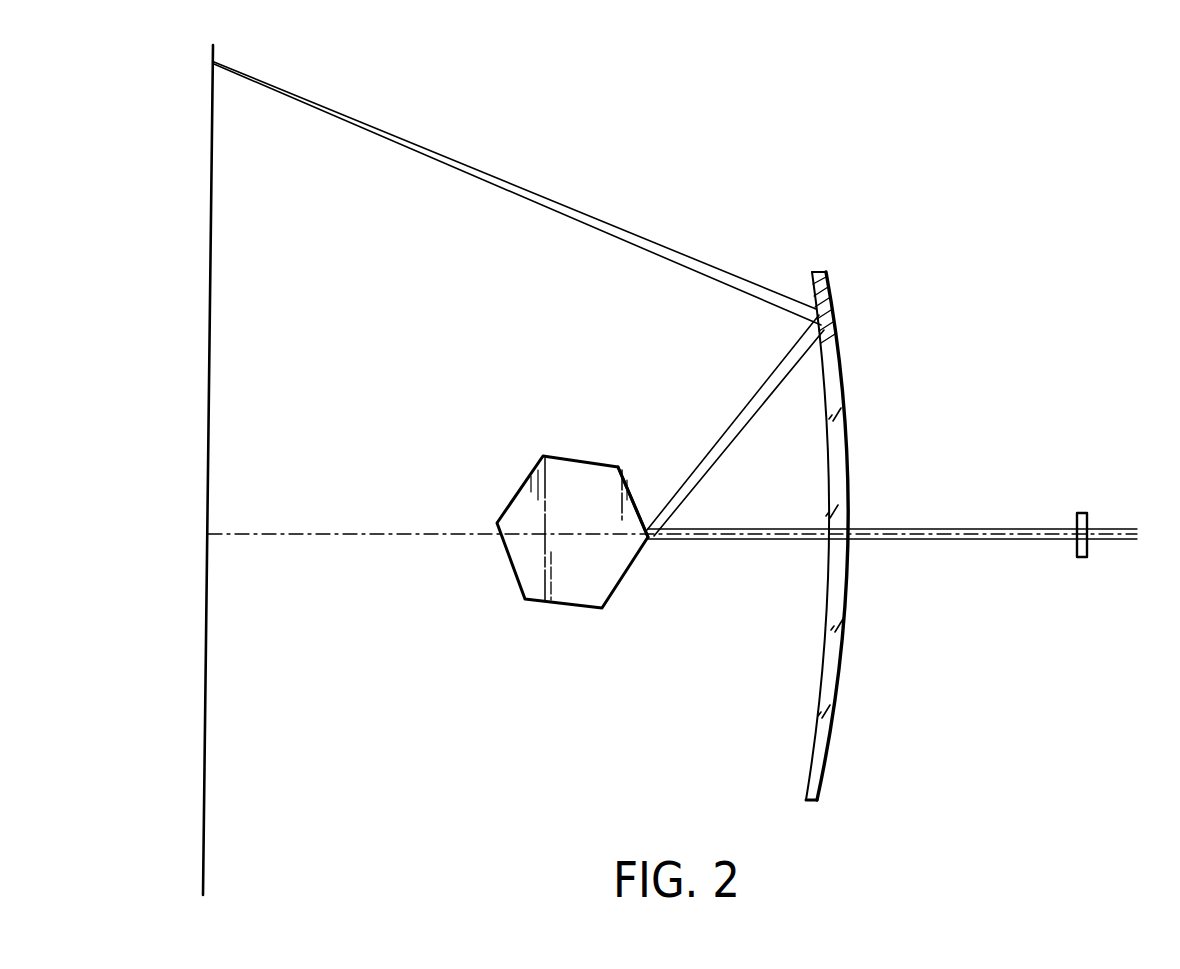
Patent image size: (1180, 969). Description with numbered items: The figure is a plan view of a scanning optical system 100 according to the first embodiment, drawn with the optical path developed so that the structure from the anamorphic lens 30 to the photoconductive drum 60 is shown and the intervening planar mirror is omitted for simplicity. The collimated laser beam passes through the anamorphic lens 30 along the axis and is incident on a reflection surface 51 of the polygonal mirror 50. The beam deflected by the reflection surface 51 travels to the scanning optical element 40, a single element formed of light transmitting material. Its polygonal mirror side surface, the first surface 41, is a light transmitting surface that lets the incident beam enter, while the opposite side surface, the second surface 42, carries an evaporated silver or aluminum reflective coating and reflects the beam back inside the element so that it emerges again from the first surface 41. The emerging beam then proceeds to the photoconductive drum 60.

The scanning optical system 100 is at (937, 131).
The anamorphic lens 30 is at (1083, 558).
The scanning optical element 40 is at (826, 504).
The first surface 41 is at (812, 287).
The second surface 42 is at (828, 288).
The polygonal mirror 50 is at (592, 546).
The reflection surface 51 is at (625, 473).
The photoconductive drum 60 is at (205, 758).